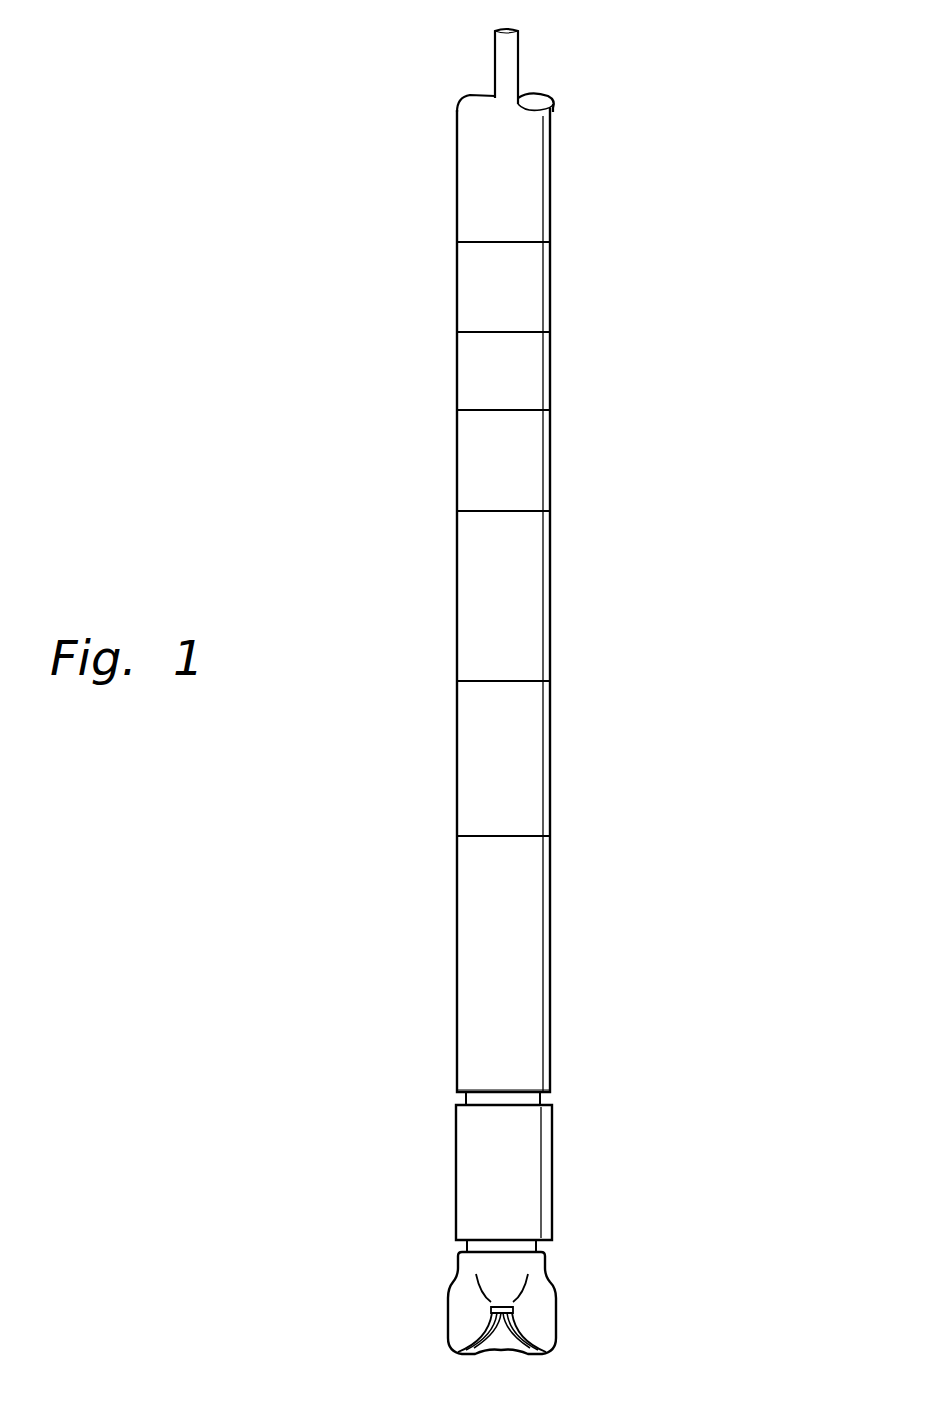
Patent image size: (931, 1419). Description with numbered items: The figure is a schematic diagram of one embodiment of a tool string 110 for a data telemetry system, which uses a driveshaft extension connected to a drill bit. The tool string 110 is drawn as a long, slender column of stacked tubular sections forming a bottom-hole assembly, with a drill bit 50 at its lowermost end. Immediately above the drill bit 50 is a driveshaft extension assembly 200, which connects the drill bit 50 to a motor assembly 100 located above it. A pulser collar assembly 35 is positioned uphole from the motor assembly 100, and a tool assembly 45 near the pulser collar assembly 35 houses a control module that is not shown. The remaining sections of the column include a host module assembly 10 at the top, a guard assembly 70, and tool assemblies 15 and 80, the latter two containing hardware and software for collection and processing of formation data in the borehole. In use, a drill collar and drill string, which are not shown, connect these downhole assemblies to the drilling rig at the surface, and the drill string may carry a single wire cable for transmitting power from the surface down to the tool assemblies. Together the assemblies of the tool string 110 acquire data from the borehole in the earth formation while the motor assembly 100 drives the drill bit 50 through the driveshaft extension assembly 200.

The tool string 110 is at (697, 224).
The host module assembly 10 is at (457, 175).
The tool assembly 80 is at (457, 284).
The tool assembly 45 is at (457, 372).
The guard assembly 70 is at (457, 457).
The pulser collar assembly 35 is at (457, 593).
The tool assembly 15 is at (457, 761).
The motor assembly 100 is at (457, 884).
The driveshaft extension assembly 200 is at (456, 1170).
The drill bit 50 is at (447, 1302).